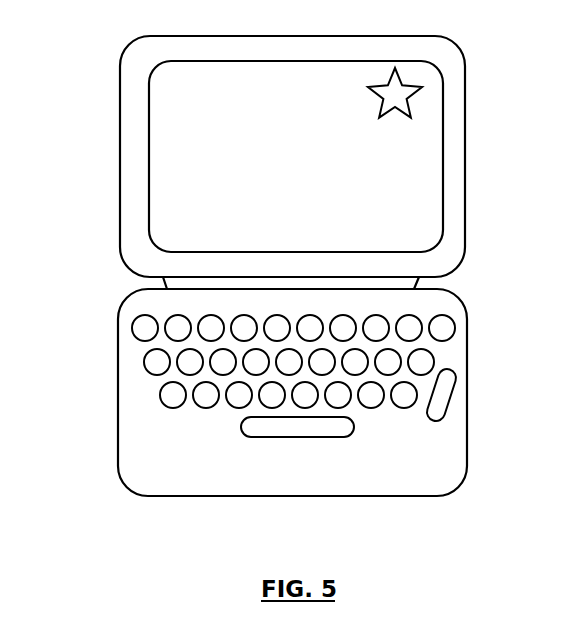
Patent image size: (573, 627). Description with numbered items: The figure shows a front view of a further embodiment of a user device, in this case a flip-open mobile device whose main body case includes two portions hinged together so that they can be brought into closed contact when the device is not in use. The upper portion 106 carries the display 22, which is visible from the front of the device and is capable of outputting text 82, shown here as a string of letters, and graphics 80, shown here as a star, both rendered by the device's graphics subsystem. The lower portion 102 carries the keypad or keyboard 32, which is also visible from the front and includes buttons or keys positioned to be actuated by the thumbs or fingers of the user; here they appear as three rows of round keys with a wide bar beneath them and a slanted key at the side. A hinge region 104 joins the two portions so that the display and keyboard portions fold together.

The display 22 is at (170, 161).
The keyboard 32 is at (133, 401).
The graphics 80 is at (366, 94).
The text 82 is at (287, 140).
The base housing 102 is at (467, 398).
The hinge 104 is at (467, 355).
The lid 106 is at (465, 163).